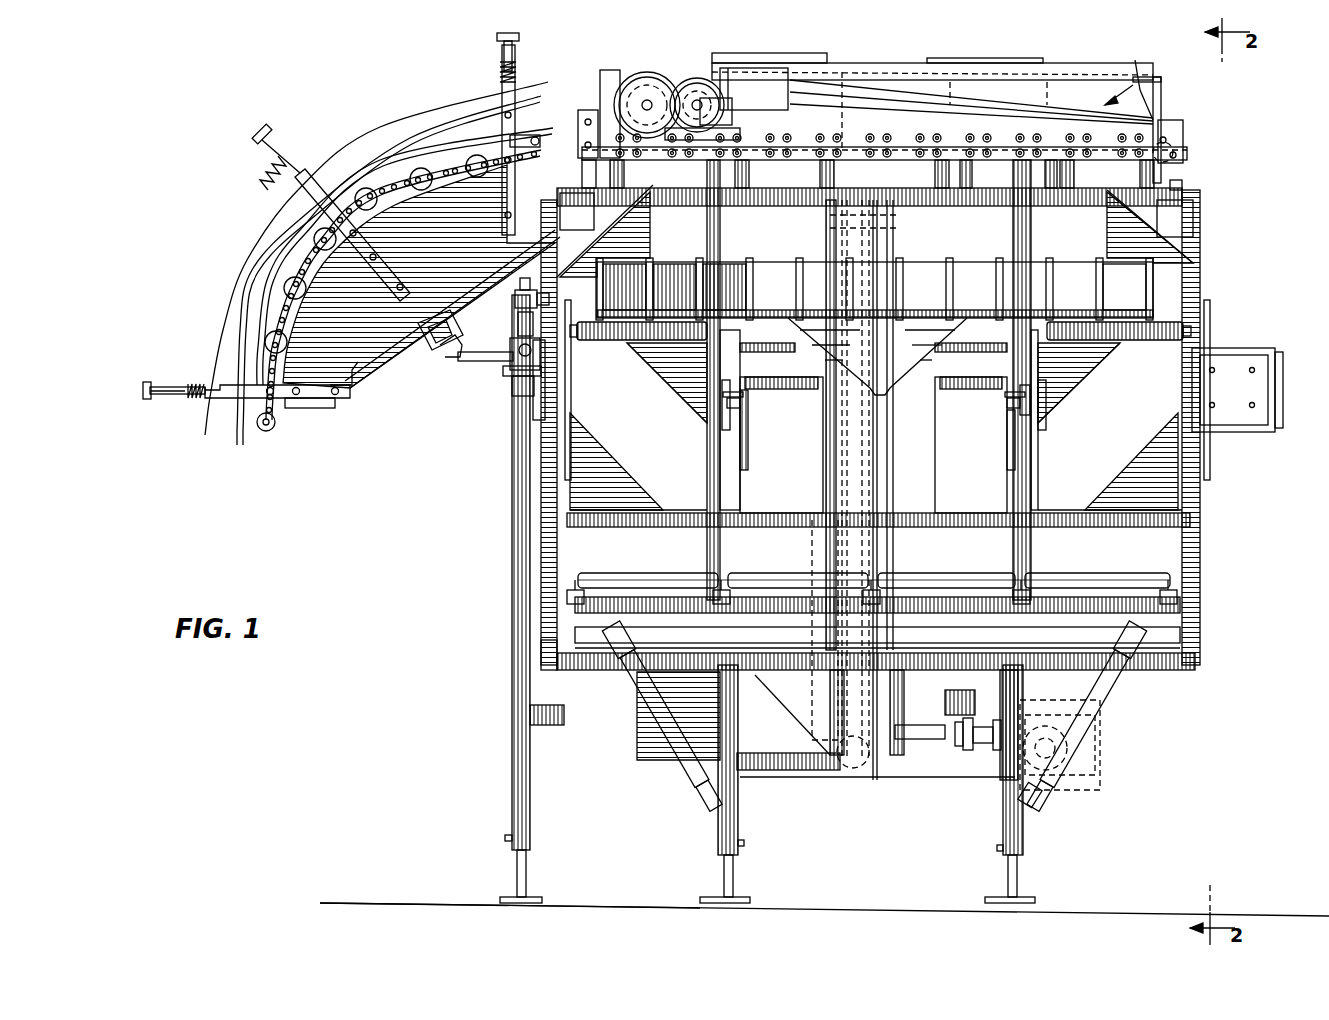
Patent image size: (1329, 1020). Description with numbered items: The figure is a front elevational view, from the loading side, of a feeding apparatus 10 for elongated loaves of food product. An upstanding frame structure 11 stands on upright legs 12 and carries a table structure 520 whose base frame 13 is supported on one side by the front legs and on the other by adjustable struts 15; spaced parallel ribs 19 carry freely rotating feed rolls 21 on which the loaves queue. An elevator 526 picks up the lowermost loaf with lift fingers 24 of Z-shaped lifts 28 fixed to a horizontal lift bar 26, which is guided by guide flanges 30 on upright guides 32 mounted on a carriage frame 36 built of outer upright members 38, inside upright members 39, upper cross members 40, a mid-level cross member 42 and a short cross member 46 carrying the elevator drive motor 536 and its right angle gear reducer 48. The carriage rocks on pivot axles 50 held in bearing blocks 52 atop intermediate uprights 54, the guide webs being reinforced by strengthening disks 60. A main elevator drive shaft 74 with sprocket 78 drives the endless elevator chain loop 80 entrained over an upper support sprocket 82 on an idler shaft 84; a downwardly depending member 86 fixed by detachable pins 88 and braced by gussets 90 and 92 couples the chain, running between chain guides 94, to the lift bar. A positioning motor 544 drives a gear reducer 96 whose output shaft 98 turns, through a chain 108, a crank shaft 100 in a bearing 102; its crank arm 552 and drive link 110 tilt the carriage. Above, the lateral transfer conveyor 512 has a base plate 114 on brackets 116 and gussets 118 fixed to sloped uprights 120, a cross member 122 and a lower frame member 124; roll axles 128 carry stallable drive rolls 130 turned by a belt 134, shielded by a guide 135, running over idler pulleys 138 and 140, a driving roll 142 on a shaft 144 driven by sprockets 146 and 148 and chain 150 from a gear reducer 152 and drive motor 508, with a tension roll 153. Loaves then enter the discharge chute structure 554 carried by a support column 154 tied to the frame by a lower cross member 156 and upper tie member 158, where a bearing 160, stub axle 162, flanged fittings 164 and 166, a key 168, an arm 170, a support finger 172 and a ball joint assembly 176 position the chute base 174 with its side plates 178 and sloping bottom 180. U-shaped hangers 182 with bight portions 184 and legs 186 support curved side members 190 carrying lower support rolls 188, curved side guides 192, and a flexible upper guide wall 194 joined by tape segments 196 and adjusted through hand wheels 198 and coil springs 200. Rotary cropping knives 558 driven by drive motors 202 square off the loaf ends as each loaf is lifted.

The feeding apparatus 10 is at (432, 752).
The frame structure 11 is at (1205, 517).
The upright legs 12 is at (738, 825).
The base frame 13 is at (1165, 660).
The struts 15 is at (1098, 712).
The ribs 19 is at (567, 598).
The feed rolls 21 is at (650, 572).
The lift fingers 24 is at (640, 335).
The lift bar 26 is at (1130, 297).
The Z-shaped lifts 28 is at (660, 262).
The guide flanges 30 is at (707, 455).
The upright guides 32 is at (703, 436).
The carriage frame 36 is at (978, 40).
The outer upright members 38 is at (810, 466).
The inside upright members 39 is at (733, 480).
The horizontal cross members 40 is at (790, 55).
The mid-level cross member 42 is at (1000, 395).
The short cross member 46 is at (895, 740).
The right angle gear reducer 48 is at (870, 655).
The pivot axles 50 is at (745, 405).
The bearing blocks 52 is at (748, 394).
The intermediate uprights 54 is at (780, 420).
The strengthening disks 60 is at (690, 400).
The main elevator drive shaft 74 is at (840, 782).
The sprocket 78 is at (812, 775).
The elevator chain loop 80 is at (830, 222).
The upper support sprocket 82 is at (842, 72).
The idler shaft 84 is at (880, 75).
The downwardly depending member 86 is at (878, 400).
The detachable pins 88 is at (880, 370).
The stiffening gusset 90 is at (990, 360).
The stiffening gusset 92 is at (812, 325).
The chain guides 94 is at (880, 240).
The gear reducer 96 is at (1095, 760).
The right angle output shaft 98 is at (1045, 795).
The crank shaft 100 is at (1005, 760).
The bearing 102 is at (985, 775).
The chain 108 is at (1045, 645).
The drive link 110 is at (960, 748).
The base plate 114 is at (1160, 95).
The brackets 116 is at (570, 192).
The gussets 118 is at (565, 245).
The rearwardly sloped uprights 120 is at (1200, 492).
The horizontal cross member 122 is at (690, 198).
The lower horizontal frame member 124 is at (595, 655).
The roll axles 128 is at (1052, 160).
The drive rolls 130 is at (965, 160).
The belt 134 is at (1040, 80).
The sheet metal guide 135 is at (1135, 60).
The belt idler pulley 138 is at (1182, 130).
The belt idler pulley 140 is at (590, 120).
The driving roll 142 is at (640, 100).
The shaft 144 is at (630, 90).
The sprockets 146 is at (650, 105).
The drive sprocket 148 is at (697, 80).
The chain 150 is at (697, 105).
The gear reducer 152 is at (790, 160).
The tension roll 153 is at (665, 160).
The support column 154 is at (512, 660).
The lower cross member 156 is at (570, 720).
The upper tie member 158 is at (530, 290).
The bearing 160 is at (515, 298).
The stub axle 162 is at (518, 322).
The flanged fitting 164 is at (510, 370).
The fitting 166 is at (505, 372).
The removable key 168 is at (518, 395).
The arm 170 is at (485, 362).
The support finger 172 is at (445, 355).
The chute base 174 is at (372, 318).
The ball joint assembly 176 is at (428, 345).
The side plates 178 is at (330, 400).
The sloping bottom 180 is at (348, 395).
The U-shaped hangers 182 is at (503, 72).
The bight portion 184 is at (520, 60).
The legs 186 is at (405, 232).
The lower support rolls 188 is at (440, 170).
The curved side members 190 is at (378, 195).
The curved side guides 192 is at (240, 445).
The upper guide wall 194 is at (410, 125).
The tape segments 196 is at (380, 125).
The hand wheels 198 is at (500, 38).
The coil springs 200 is at (500, 82).
The drive motors 202 is at (1250, 345).
The lateral transfer conveyor drive motor 508 is at (735, 58).
The lateral transfer conveyor 512 is at (1155, 78).
The table structure 520 is at (1152, 562).
The elevator 526 is at (1160, 278).
The elevator drive motor 536 is at (815, 550).
The positioning motor 544 is at (1100, 740).
The crank arm 552 is at (982, 725).
The discharge chute structure 554 is at (360, 440).
The rotary cropping knives 558 is at (580, 400).